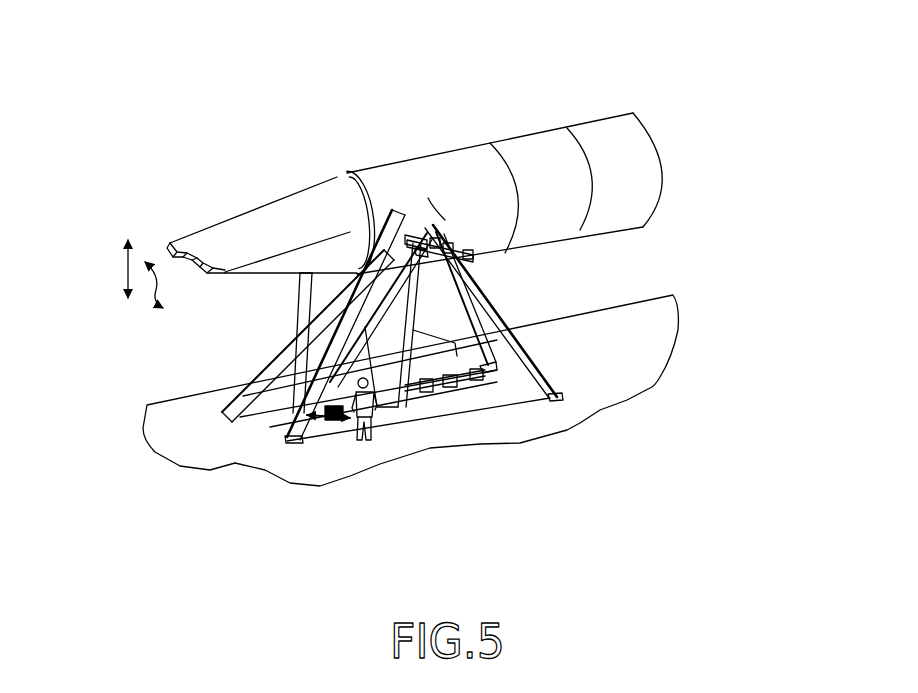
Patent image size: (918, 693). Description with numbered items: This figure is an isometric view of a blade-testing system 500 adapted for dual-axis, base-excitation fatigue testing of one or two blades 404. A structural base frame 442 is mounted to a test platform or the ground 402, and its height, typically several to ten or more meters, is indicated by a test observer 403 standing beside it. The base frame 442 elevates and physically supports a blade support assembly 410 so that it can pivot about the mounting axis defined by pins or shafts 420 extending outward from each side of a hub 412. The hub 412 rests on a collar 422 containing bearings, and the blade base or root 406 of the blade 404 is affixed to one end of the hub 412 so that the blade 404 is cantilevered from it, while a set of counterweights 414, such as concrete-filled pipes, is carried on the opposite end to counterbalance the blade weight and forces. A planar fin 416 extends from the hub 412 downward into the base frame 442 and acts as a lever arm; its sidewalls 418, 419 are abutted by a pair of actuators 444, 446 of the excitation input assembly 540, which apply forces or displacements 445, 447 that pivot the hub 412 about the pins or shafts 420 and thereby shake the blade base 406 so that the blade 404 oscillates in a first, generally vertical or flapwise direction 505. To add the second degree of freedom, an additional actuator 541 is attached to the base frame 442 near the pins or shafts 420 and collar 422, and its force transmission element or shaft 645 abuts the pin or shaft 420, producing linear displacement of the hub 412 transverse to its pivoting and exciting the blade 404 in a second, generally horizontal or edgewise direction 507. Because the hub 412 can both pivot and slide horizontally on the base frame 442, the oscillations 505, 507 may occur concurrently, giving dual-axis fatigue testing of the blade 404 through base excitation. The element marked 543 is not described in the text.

The test platform or ground 402 is at (180, 455).
The test observer 403 is at (353, 430).
The blade 404 is at (189, 202).
The blade base or root 406 is at (342, 187).
The blade support assembly 410 is at (356, 141).
The hub 412 is at (355, 171).
The counterweights 414 is at (503, 180).
The fin 416 is at (405, 340).
The sidewall of fin 418 is at (388, 423).
The sidewall of fin 419 is at (398, 407).
The pins/shafts 420 is at (438, 233).
The collar 422 is at (417, 227).
The base frame 442 is at (283, 300).
The actuator 444 is at (307, 417).
The displacement/stroke or force input 445 is at (330, 418).
The actuator 446 is at (493, 395).
The displacement/stroke or force input 447 is at (418, 400).
The blade-testing system 500 is at (552, 80).
The first direction of oscillation 505 is at (127, 263).
The second direction of oscillation 507 is at (156, 292).
The excitation input assembly 540 is at (228, 353).
The actuator 541 is at (467, 250).
The fitting 543 is at (427, 247).
The force transmission element or shaft 645 is at (428, 198).